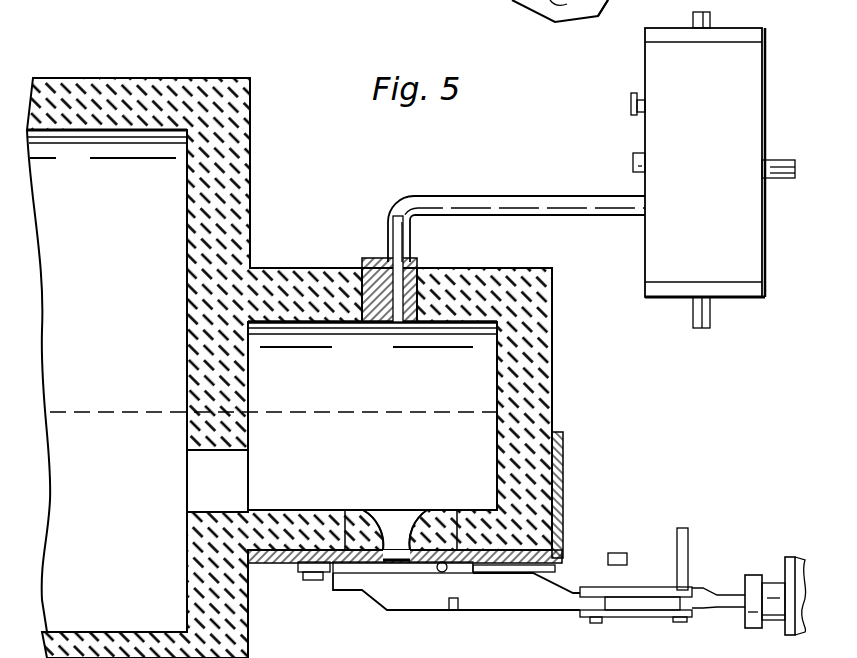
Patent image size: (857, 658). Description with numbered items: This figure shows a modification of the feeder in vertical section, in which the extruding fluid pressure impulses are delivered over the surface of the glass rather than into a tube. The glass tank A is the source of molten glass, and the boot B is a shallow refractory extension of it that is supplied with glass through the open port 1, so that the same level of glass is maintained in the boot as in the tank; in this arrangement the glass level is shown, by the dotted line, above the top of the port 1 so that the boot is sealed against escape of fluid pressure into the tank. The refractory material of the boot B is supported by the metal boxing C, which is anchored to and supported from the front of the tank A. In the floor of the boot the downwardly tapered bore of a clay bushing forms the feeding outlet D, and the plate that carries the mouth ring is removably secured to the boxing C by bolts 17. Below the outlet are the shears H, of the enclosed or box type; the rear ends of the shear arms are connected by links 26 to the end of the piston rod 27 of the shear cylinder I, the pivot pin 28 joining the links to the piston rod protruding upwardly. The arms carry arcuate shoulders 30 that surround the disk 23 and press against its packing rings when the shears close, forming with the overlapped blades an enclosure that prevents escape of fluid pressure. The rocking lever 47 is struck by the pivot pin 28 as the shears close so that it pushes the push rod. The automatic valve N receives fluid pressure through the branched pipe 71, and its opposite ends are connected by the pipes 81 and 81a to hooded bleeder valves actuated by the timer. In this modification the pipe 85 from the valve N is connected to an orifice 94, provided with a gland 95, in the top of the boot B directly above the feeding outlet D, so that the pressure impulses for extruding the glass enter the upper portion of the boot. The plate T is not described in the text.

The open port 1 is at (217, 481).
The bolts 17 is at (312, 582).
The disk 23 is at (603, 8).
The links 26 is at (638, 597).
The piston rod 27 is at (725, 597).
The pivot pin 28 is at (688, 550).
The arcuate shoulders 30 is at (525, 0).
The rocking lever 47 is at (617, 552).
The branched fluid pressure pipe 71 is at (786, 159).
The pipe 81 is at (714, 18).
The pipe 81a is at (713, 313).
The pipe 85 is at (552, 199).
The orifice 94 is at (433, 273).
The gland 95 is at (430, 262).
The glass tank A is at (262, 381).
The boot B is at (372, 357).
The metal boxing C is at (563, 498).
The feeding outlet D is at (395, 530).
The shears H is at (456, 606).
The shear cylinder I is at (775, 582).
The automatic valve N is at (698, 162).
The plate T is at (556, 568).